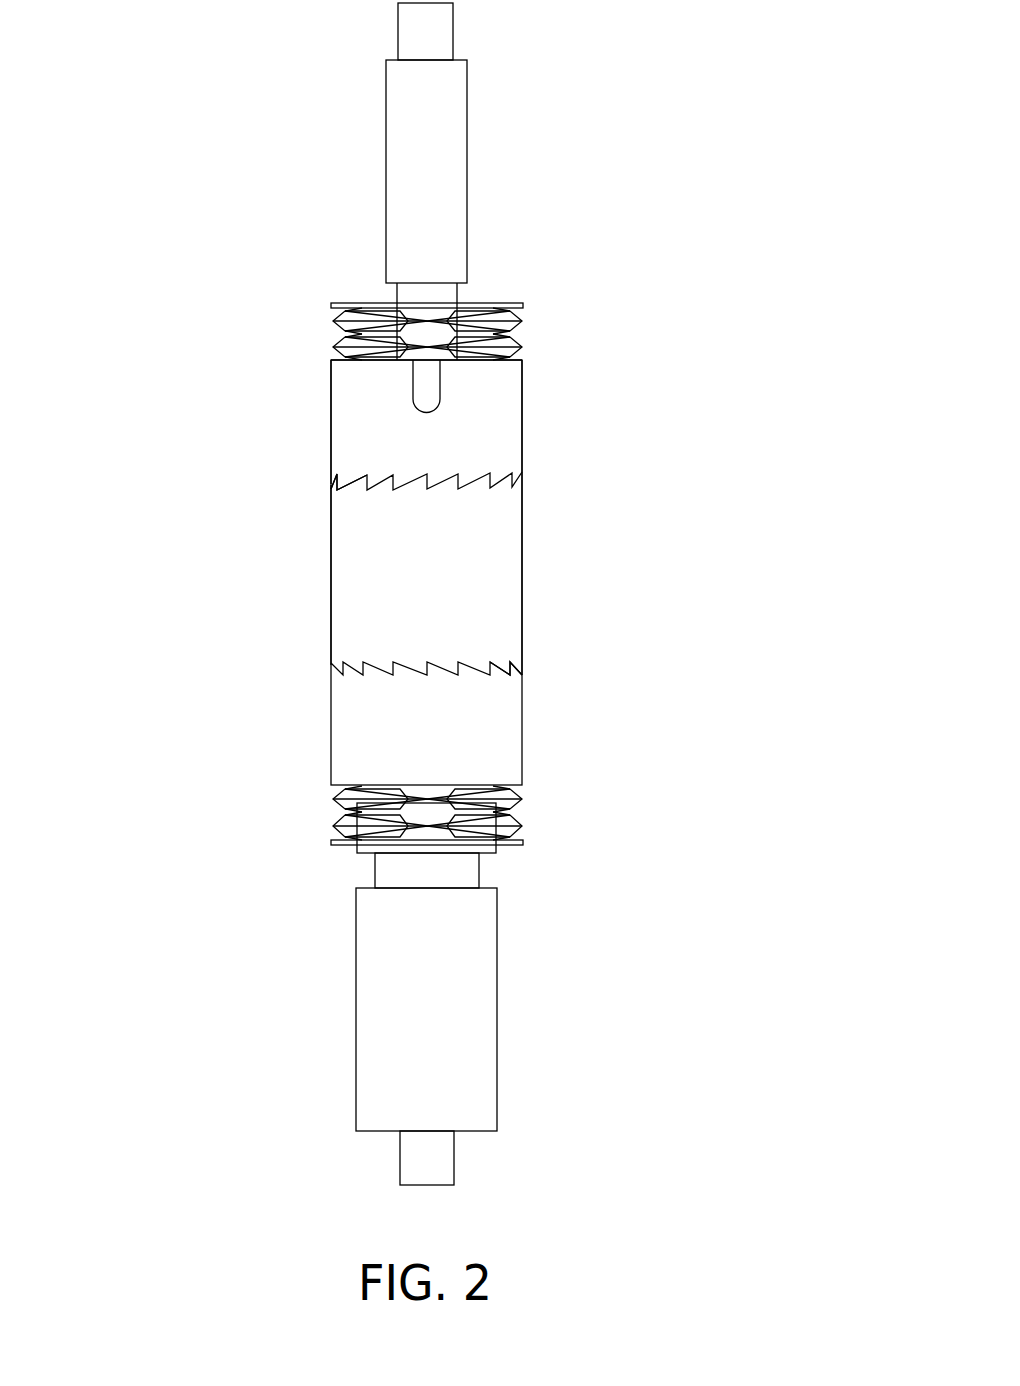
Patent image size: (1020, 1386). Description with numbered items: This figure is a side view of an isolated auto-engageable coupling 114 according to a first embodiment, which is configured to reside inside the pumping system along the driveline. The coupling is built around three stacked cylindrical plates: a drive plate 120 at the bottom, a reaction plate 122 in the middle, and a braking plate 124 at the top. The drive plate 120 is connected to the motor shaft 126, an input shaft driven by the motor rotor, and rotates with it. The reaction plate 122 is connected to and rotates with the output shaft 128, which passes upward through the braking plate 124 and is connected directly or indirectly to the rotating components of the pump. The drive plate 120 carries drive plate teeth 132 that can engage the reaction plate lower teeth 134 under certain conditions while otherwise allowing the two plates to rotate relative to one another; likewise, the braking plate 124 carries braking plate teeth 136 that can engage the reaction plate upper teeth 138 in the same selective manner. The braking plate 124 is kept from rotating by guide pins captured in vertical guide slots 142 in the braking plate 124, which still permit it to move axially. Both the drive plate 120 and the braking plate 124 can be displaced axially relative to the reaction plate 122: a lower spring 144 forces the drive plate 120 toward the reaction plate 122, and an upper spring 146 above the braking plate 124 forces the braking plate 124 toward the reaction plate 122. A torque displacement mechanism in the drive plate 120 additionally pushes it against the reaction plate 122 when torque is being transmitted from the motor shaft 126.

The auto-engageable coupling 114 is at (693, 137).
The drive plate 120 is at (365, 727).
The reaction plate 122 is at (478, 577).
The braking plate 124 is at (345, 410).
The motor shaft 126 is at (497, 923).
The output shaft 128 is at (386, 135).
The drive plate teeth 132 is at (497, 676).
The reaction plate lower teeth 134 is at (500, 660).
The braking plate teeth 136 is at (353, 476).
The reaction plate upper teeth 138 is at (352, 492).
The vertical guide slots 142 is at (443, 387).
The lower spring 144 is at (515, 832).
The upper spring 146 is at (350, 312).